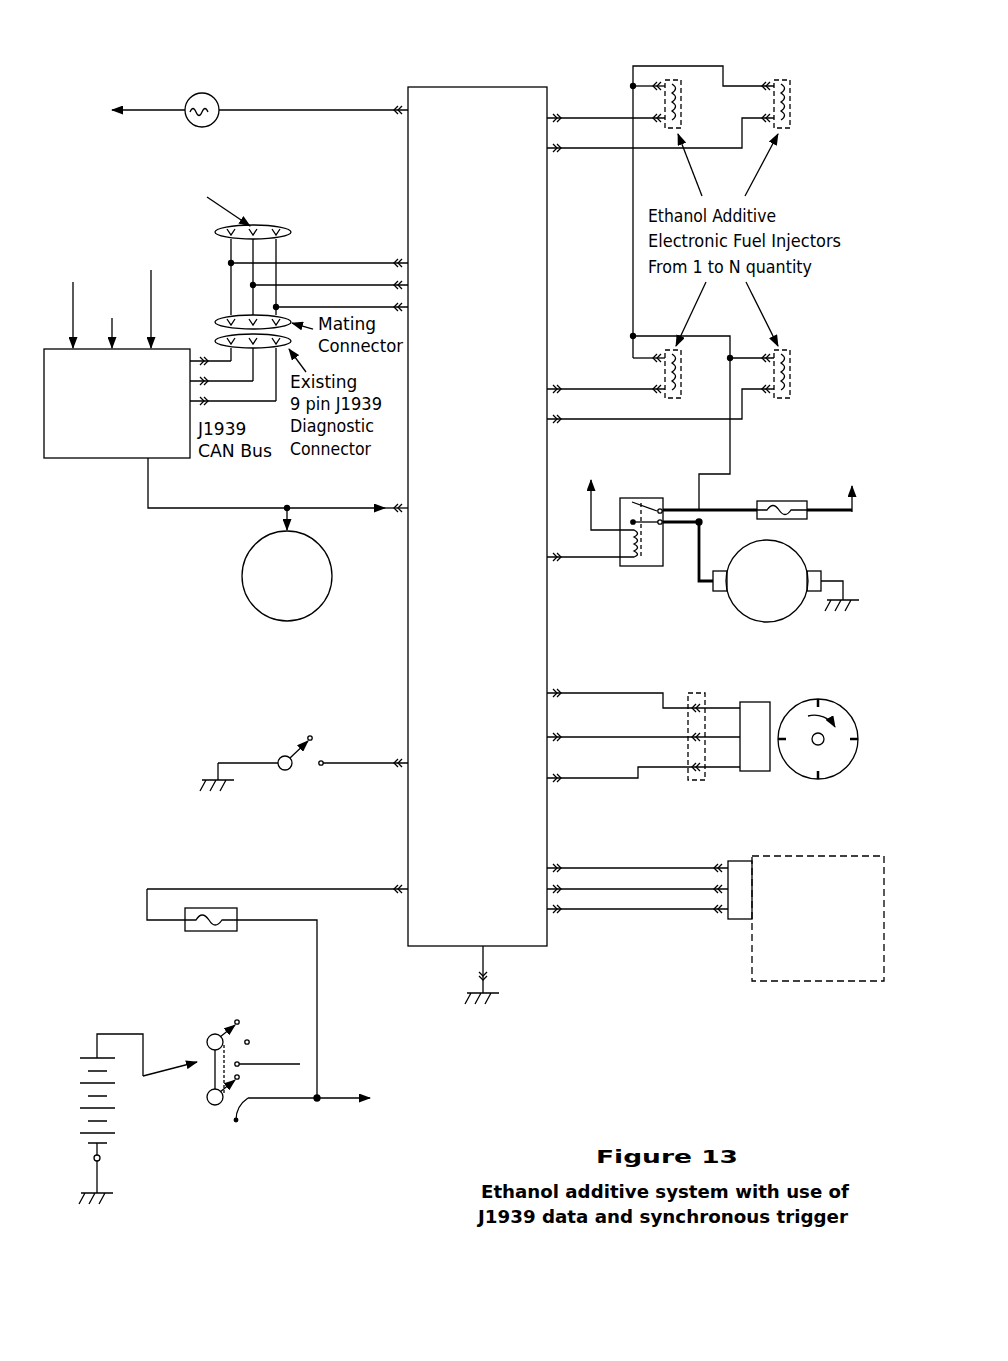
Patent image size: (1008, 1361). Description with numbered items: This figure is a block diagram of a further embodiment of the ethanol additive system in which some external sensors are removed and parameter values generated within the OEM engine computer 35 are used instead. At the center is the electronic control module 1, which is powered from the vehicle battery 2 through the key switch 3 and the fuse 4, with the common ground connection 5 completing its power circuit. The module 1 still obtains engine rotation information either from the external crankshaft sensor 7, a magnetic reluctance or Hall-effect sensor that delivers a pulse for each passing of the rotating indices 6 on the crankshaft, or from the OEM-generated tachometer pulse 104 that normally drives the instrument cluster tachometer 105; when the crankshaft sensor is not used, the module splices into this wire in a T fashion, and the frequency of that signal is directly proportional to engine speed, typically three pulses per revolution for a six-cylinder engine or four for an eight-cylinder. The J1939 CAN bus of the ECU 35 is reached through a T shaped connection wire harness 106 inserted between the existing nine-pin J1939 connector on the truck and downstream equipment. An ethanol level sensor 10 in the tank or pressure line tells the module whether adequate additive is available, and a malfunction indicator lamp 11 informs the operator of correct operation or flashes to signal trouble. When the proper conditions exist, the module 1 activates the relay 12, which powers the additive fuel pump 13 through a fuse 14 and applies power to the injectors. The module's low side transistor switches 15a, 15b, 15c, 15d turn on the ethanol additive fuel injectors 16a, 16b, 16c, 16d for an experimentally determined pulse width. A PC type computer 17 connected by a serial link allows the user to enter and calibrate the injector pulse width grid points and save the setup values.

The electronic control module 1 is at (471, 331).
The vehicle battery 2 is at (134, 1116).
The key switch 3 is at (233, 1170).
The fuse 4 is at (212, 981).
The common ground connection 5 is at (533, 1005).
The rotating indices 6 is at (884, 750).
The crankshaft sensor 7 is at (761, 748).
The ethanol level sensor 10 is at (314, 800).
The malfunction indicator lamp 11 is at (231, 45).
The relay 12 is at (643, 615).
The additive fuel pump 13 is at (776, 645).
The fuse 14 is at (836, 538).
The low side transistor switch 15a is at (541, 127).
The low side transistor switch 15b is at (541, 157).
The low side transistor switch 15c is at (541, 397).
The low side transistor switch 15d is at (541, 427).
The fuel injector 16a is at (720, 114).
The fuel injector 16b is at (829, 114).
The fuel injector 16c is at (720, 383).
The fuel injector 16d is at (829, 383).
The PC type computer 17 is at (828, 920).
The OEM engine computer 35 is at (126, 440).
The tachometer pulse 104 is at (367, 499).
The instrument cluster tachometer 105 is at (231, 599).
The T shaped connection wire harness 106 is at (222, 311).